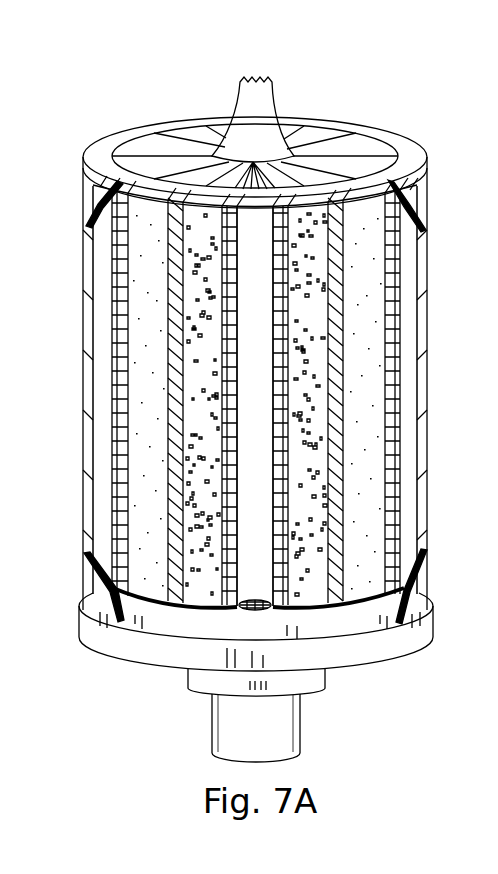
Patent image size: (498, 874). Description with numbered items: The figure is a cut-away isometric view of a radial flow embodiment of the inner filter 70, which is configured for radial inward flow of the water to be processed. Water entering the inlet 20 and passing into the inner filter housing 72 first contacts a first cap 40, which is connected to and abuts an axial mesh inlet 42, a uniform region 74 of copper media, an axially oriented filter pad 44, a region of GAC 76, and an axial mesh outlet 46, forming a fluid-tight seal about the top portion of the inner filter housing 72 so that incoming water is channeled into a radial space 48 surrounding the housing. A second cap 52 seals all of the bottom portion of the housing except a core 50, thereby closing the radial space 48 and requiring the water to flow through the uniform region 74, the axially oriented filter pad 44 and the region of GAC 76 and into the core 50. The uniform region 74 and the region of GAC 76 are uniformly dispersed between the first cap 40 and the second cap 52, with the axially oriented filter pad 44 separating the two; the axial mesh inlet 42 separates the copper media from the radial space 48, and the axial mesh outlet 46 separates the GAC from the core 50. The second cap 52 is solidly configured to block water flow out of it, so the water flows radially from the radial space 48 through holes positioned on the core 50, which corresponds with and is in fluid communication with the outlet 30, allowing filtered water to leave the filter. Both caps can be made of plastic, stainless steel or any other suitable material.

The inner filter 70 is at (153, 72).
The inlet 20 is at (262, 97).
The first cap 40 is at (362, 143).
The inner filter housing 72 is at (117, 184).
The axial mesh outlet 46 is at (287, 228).
The axially oriented filter pad 44 is at (335, 283).
The radial space 48 is at (407, 337).
The axial mesh inlet 42 is at (378, 393).
The uniform region 74 is at (372, 443).
The region of GAC 76 is at (317, 497).
The core 50 is at (250, 540).
The second cap 52 is at (317, 613).
The outlet 30 is at (287, 742).